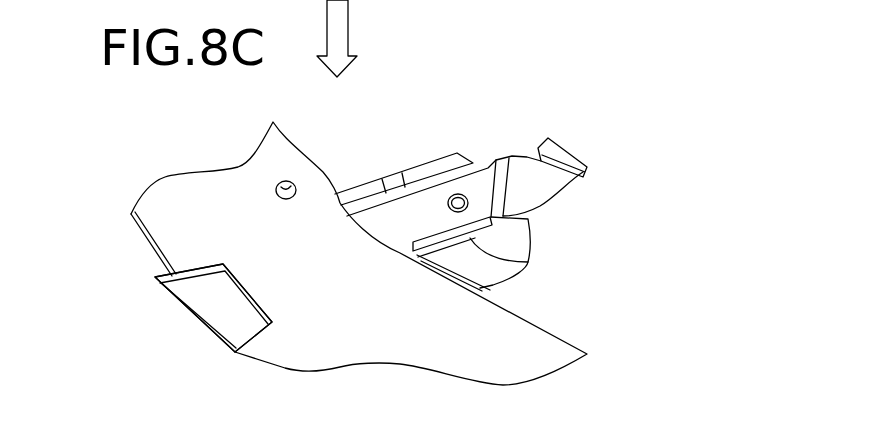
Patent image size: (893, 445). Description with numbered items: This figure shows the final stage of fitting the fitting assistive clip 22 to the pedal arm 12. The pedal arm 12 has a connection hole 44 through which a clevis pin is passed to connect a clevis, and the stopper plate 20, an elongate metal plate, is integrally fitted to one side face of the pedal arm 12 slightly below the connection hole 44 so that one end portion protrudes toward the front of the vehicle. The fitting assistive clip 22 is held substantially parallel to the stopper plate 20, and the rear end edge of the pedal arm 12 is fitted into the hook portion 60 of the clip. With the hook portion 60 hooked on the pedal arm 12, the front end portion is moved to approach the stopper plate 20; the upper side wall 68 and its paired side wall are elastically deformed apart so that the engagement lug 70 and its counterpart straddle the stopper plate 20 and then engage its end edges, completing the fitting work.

The pedal arm 12 is at (172, 207).
The stopper plate 20 is at (487, 170).
The fitting assistive clip 22 is at (153, 335).
The connection hole 44 is at (277, 190).
The hook portion 60 is at (197, 328).
The upper side wall 68 is at (418, 180).
The engagement lug 70 is at (528, 262).